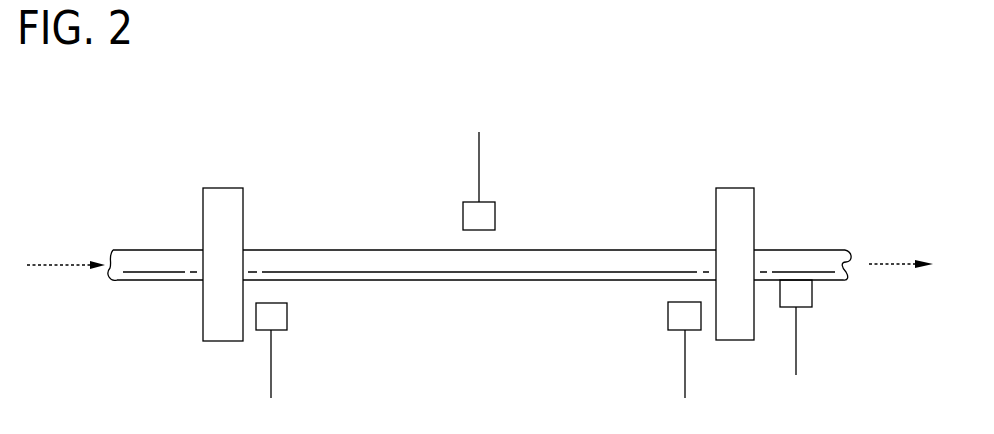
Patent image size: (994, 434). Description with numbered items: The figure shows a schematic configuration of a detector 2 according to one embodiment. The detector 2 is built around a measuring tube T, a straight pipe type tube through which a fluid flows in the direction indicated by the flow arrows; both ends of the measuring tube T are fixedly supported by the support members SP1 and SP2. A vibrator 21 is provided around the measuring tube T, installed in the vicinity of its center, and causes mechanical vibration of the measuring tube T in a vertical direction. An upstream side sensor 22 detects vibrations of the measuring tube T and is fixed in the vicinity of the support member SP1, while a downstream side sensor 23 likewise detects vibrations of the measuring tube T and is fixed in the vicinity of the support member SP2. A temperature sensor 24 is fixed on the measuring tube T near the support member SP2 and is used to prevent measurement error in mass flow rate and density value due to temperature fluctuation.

The detector 2 is at (689, 145).
The vibrator 21 is at (495, 215).
The upstream side sensor 22 is at (287, 313).
The downstream side sensor 23 is at (668, 318).
The temperature sensor 24 is at (812, 290).
The measuring tube T is at (442, 281).
The support member SP1 is at (222, 341).
The support member SP2 is at (734, 340).